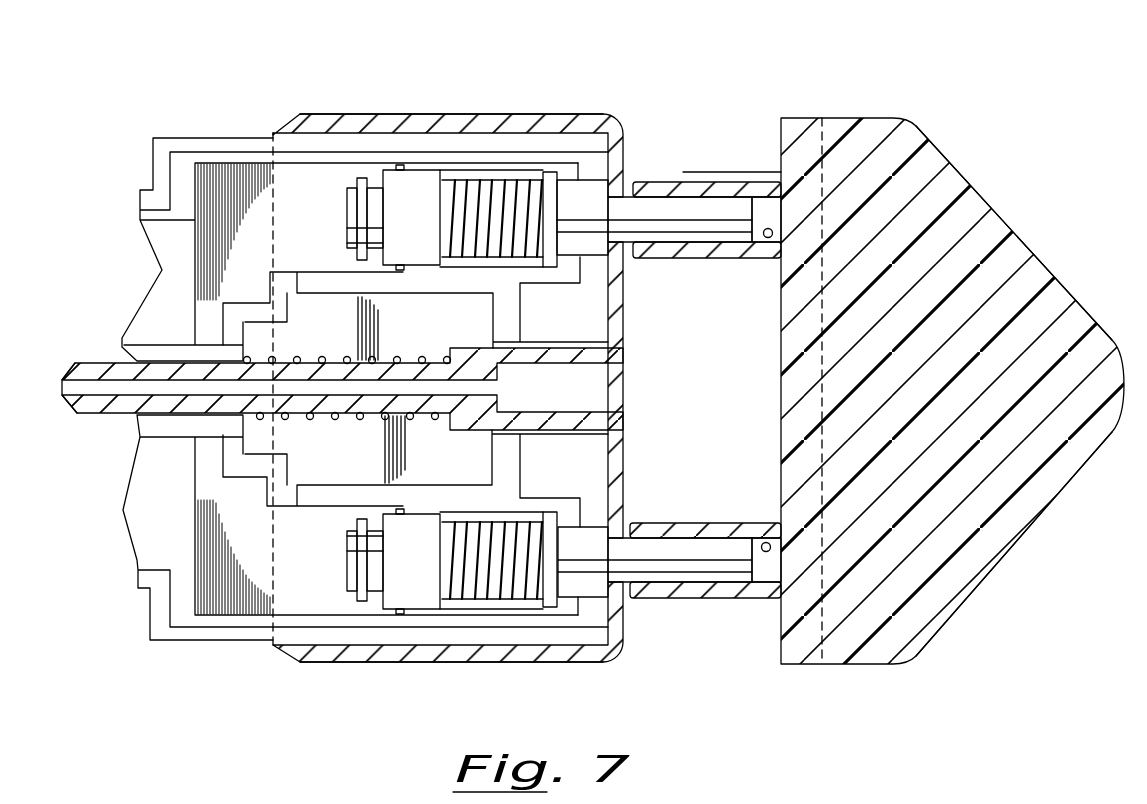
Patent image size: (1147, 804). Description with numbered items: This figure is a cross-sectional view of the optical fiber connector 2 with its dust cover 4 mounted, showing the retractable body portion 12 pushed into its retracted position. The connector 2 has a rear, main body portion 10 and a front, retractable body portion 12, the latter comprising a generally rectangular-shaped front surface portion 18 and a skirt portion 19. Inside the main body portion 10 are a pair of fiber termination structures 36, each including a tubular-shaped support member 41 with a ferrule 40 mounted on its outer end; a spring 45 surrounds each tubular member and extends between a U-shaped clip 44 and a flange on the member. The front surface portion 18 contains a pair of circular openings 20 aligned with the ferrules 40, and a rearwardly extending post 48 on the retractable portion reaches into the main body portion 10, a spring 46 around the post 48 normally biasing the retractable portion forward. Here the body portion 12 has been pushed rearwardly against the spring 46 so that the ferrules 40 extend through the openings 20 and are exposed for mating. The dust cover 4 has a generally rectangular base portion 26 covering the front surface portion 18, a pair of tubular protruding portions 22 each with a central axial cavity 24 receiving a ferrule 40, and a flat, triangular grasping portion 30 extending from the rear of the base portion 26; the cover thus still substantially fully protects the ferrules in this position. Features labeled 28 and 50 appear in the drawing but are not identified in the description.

The connector 2 is at (325, 681).
The dust cover 4 is at (1015, 215).
The rear, main body portion 10 is at (212, 128).
The retractable body portion 12 is at (530, 102).
The front surface portion 18 is at (627, 348).
The skirt portion 19 is at (508, 660).
The circular openings 20 is at (605, 262).
The protruding portions 22 is at (673, 182).
The central axial cavity 24 is at (774, 243).
The base portion 26 is at (807, 122).
The parting line 28 is at (795, 665).
The grasping portion 30 is at (960, 605).
The fiber termination structures 36 is at (408, 618).
The ferrule 40 is at (618, 200).
The tubular-shaped support member 41 is at (372, 190).
The U-shaped clip 44 is at (412, 185).
The spring 45 is at (490, 195).
The spring 46 is at (362, 423).
The rearwardly extending post 48 is at (335, 358).
The sleeve 50 is at (622, 157).